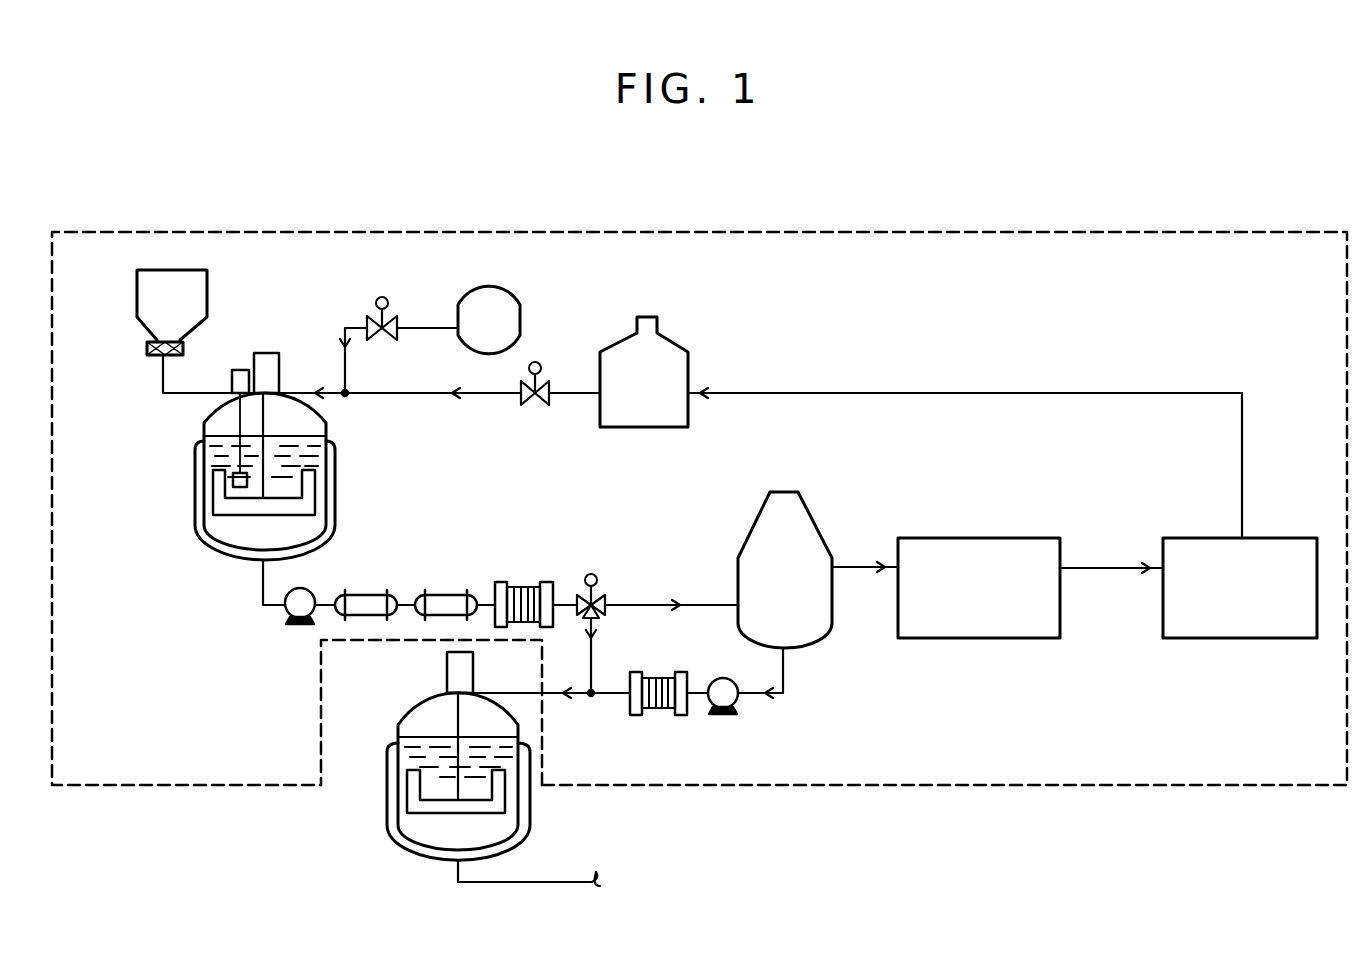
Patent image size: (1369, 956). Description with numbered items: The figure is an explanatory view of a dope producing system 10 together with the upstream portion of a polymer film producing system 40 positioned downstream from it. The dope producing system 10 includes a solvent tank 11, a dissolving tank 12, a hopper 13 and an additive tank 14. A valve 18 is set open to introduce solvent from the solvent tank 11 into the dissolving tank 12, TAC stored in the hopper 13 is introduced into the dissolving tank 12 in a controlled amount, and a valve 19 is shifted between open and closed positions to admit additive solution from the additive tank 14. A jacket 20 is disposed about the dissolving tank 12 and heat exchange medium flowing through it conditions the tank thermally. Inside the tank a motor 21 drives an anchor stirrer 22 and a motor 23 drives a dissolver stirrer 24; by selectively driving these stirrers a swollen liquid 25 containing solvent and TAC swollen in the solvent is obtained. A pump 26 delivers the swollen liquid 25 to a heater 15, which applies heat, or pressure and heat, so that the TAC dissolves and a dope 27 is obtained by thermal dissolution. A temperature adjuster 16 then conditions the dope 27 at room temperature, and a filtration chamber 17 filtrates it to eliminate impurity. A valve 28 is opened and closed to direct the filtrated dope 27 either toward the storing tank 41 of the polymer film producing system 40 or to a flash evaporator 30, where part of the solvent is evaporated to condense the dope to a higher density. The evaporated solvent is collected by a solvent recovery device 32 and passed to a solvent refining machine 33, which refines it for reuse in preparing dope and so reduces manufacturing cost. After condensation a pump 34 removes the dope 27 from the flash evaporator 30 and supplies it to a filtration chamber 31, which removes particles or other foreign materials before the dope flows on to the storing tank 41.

The dope producing system 10 is at (822, 222).
The solvent tank 11 is at (690, 360).
The dissolving tank 12 is at (327, 425).
The hopper 13 is at (137, 295).
The additive tank 14 is at (521, 320).
The heater 15 is at (366, 592).
The temperature adjuster 16 is at (445, 592).
The filtration chamber 17 is at (522, 586).
The valve 18 is at (535, 405).
The valve 19 is at (373, 314).
The jacket 20 is at (196, 522).
The motor 21 is at (268, 350).
The anchor stirrer 22 is at (305, 485).
The motor 23 is at (240, 368).
The dissolver stirrer 24 is at (222, 480).
The swollen liquid 25 is at (243, 545).
The pump 26 is at (300, 626).
The dope 27 is at (430, 830).
The valve 28 is at (605, 612).
The flash evaporator 30 is at (765, 530).
The filtration chamber 31 is at (660, 716).
The solvent recovery device 32 is at (977, 639).
The solvent refining machine 33 is at (1242, 639).
The pump 34 is at (723, 716).
The polymer film producing system 40 is at (560, 846).
The storing tank 41 is at (398, 720).